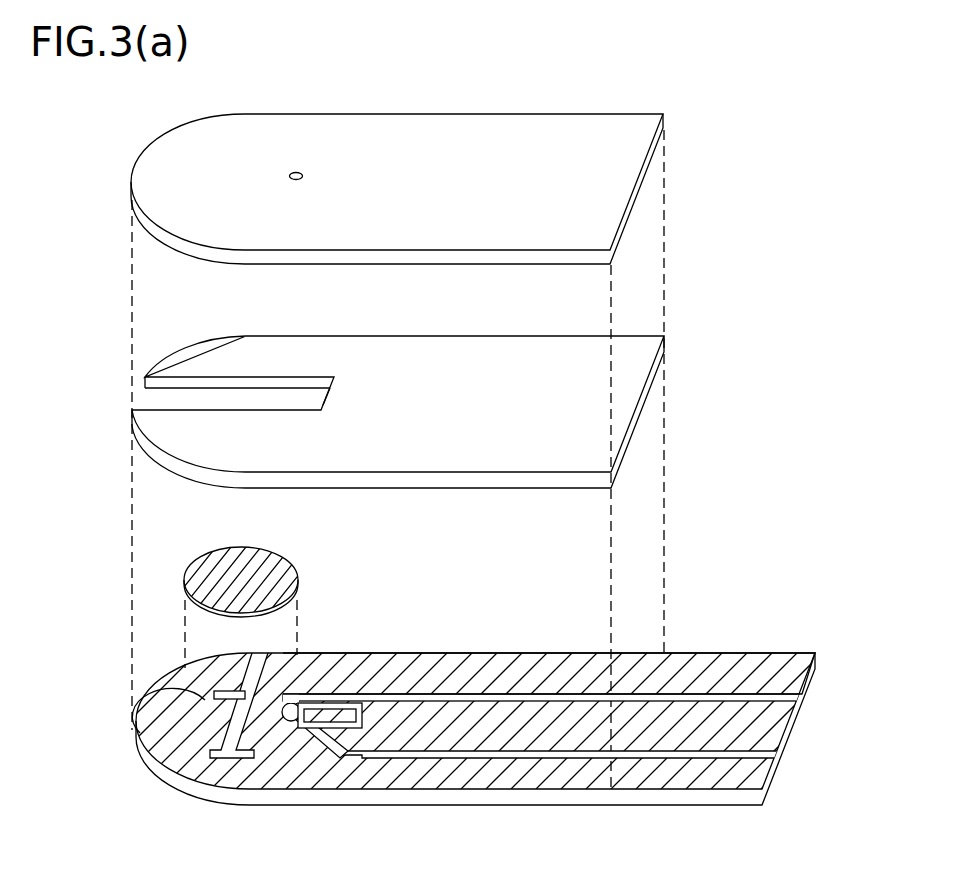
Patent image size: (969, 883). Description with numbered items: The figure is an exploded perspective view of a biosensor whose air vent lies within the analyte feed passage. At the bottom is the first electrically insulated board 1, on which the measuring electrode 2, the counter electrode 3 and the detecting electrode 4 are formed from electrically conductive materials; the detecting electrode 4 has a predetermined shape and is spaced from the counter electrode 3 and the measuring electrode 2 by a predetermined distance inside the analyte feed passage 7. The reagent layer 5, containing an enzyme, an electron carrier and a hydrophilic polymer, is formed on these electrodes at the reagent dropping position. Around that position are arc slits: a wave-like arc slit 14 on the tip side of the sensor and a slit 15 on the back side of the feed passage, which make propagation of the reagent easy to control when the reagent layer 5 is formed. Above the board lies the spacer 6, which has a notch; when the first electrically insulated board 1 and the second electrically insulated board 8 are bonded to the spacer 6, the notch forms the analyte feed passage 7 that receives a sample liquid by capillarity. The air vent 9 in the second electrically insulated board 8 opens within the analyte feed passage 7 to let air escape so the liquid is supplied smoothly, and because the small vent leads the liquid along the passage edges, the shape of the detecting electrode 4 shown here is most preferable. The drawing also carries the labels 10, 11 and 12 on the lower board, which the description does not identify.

The first electrically insulated board 1 is at (740, 800).
The measuring electrode 2 is at (237, 753).
The counter electrode 3 is at (207, 698).
The detecting electrode 4 is at (388, 670).
The reagent layer 5 is at (275, 568).
The spacer 6 is at (625, 374).
The analyte feed passage 7 is at (191, 398).
The second electrically insulated board 8 is at (622, 155).
The air vent 9 is at (297, 171).
The lead portion 10 is at (783, 665).
The lead 11 is at (750, 773).
The lead 12 is at (755, 723).
The wave-like arc slit 14 is at (138, 737).
The slit 15 is at (298, 755).